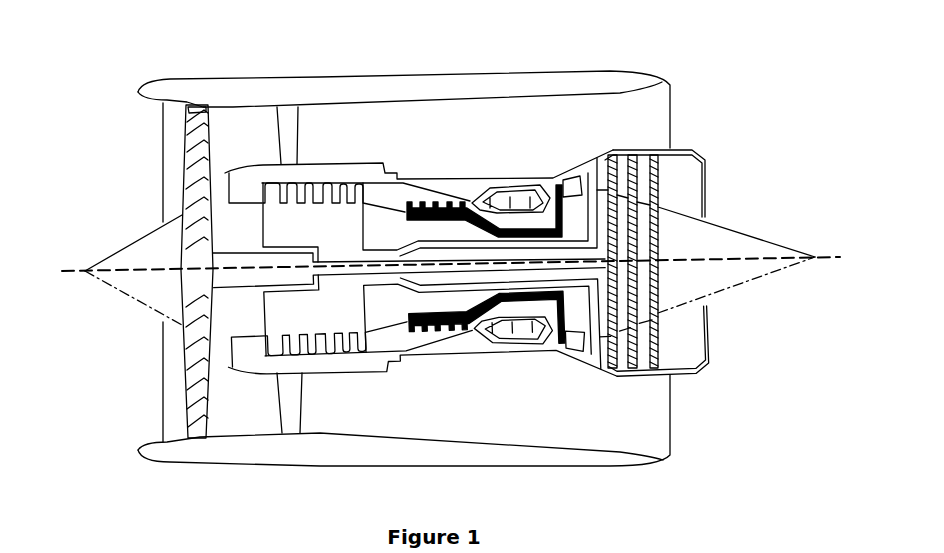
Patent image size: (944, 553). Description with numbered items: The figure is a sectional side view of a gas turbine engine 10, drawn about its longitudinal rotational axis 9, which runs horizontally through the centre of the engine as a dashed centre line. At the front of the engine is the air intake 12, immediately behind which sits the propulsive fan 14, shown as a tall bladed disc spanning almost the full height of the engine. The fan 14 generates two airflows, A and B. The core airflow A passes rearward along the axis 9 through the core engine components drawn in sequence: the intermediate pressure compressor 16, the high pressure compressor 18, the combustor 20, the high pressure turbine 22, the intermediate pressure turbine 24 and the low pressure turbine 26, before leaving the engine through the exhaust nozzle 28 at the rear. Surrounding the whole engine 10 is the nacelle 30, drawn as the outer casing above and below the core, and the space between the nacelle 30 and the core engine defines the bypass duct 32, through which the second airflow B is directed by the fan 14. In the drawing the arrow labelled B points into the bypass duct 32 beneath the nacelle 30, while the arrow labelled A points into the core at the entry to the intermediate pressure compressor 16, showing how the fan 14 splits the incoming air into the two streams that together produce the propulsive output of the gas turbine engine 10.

The longitudinal rotational axis 9 is at (752, 257).
The gas turbine engine 10 is at (104, 48).
The air intake 12 is at (170, 130).
The propulsive fan 14 is at (187, 105).
The intermediate pressure compressor 16 is at (312, 203).
The high pressure compressor 18 is at (453, 203).
The combustor 20 is at (525, 192).
The high pressure turbine 22 is at (556, 184).
The intermediate pressure turbine 24 is at (588, 173).
The low pressure turbine 26 is at (651, 172).
The exhaust nozzle 28 is at (695, 178).
The nacelle 30 is at (226, 105).
The bypass duct 32 is at (432, 138).
The airflow A is at (251, 191).
The airflow B is at (247, 148).